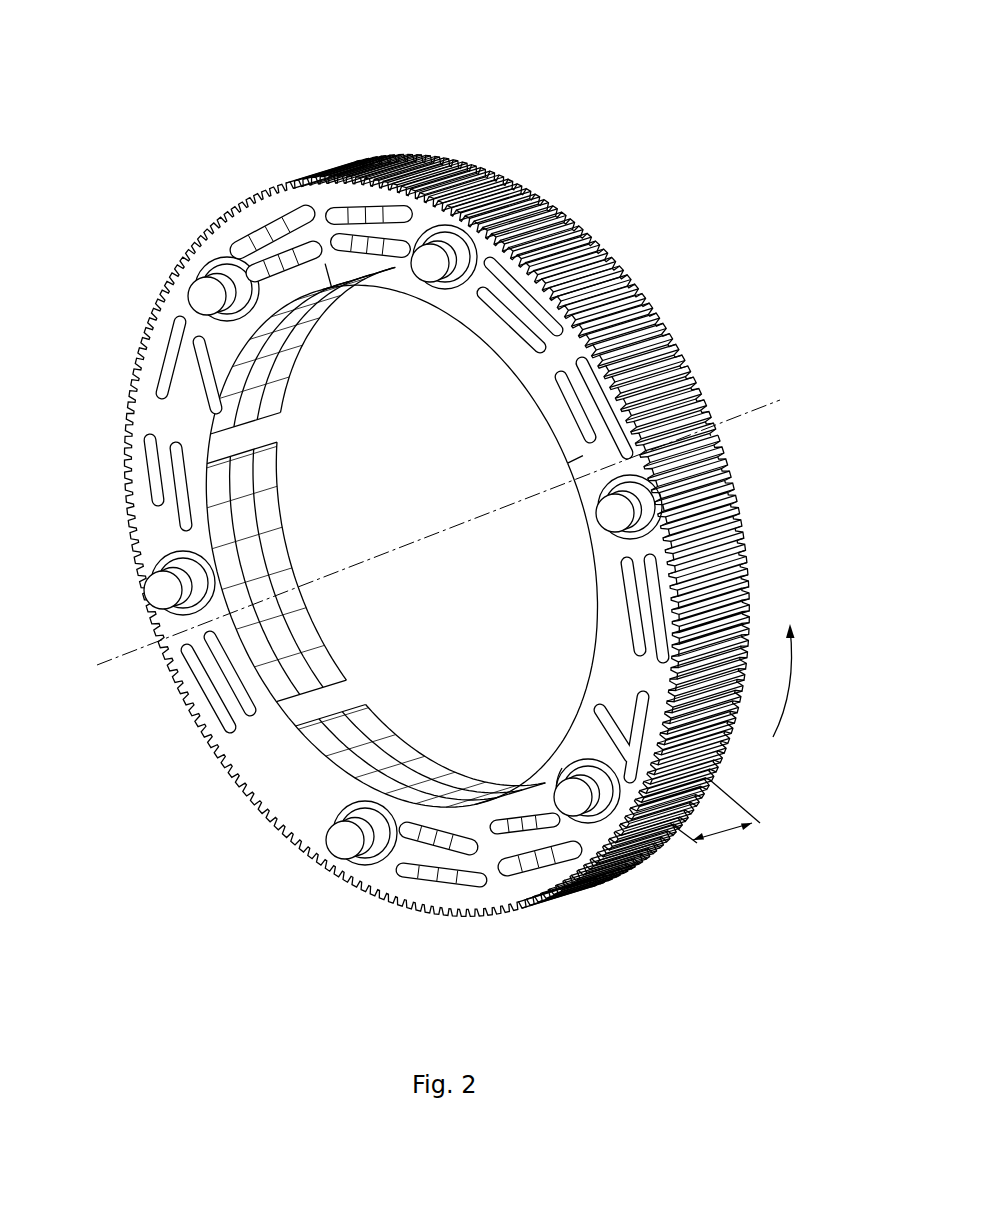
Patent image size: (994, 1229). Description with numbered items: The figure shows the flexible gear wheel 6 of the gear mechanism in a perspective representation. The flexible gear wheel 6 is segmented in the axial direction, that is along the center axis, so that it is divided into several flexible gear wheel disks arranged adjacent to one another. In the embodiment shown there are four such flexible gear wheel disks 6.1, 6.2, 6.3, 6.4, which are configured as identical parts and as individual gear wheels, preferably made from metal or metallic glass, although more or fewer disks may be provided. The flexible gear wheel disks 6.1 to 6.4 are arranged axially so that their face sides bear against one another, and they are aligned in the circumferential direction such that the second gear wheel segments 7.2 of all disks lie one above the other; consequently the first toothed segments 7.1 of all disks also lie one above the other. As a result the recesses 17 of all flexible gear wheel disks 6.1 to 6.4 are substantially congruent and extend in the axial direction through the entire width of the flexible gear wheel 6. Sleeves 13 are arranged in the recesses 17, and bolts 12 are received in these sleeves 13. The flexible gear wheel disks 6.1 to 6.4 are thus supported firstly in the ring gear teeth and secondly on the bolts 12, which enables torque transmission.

The flexible gear wheel 6 is at (695, 76).
The flexible gear wheel disk 6.1 is at (400, 153).
The flexible gear wheel disk 6.2 is at (433, 157).
The flexible gear wheel disk 6.3 is at (467, 163).
The flexible gear wheel disk 6.4 is at (487, 165).
The first toothed segment 7.1 is at (580, 503).
The second gear wheel segment 7.2 is at (533, 390).
The bolt 12 is at (538, 790).
The sleeve 13 is at (557, 783).
The recess 17 is at (197, 257).